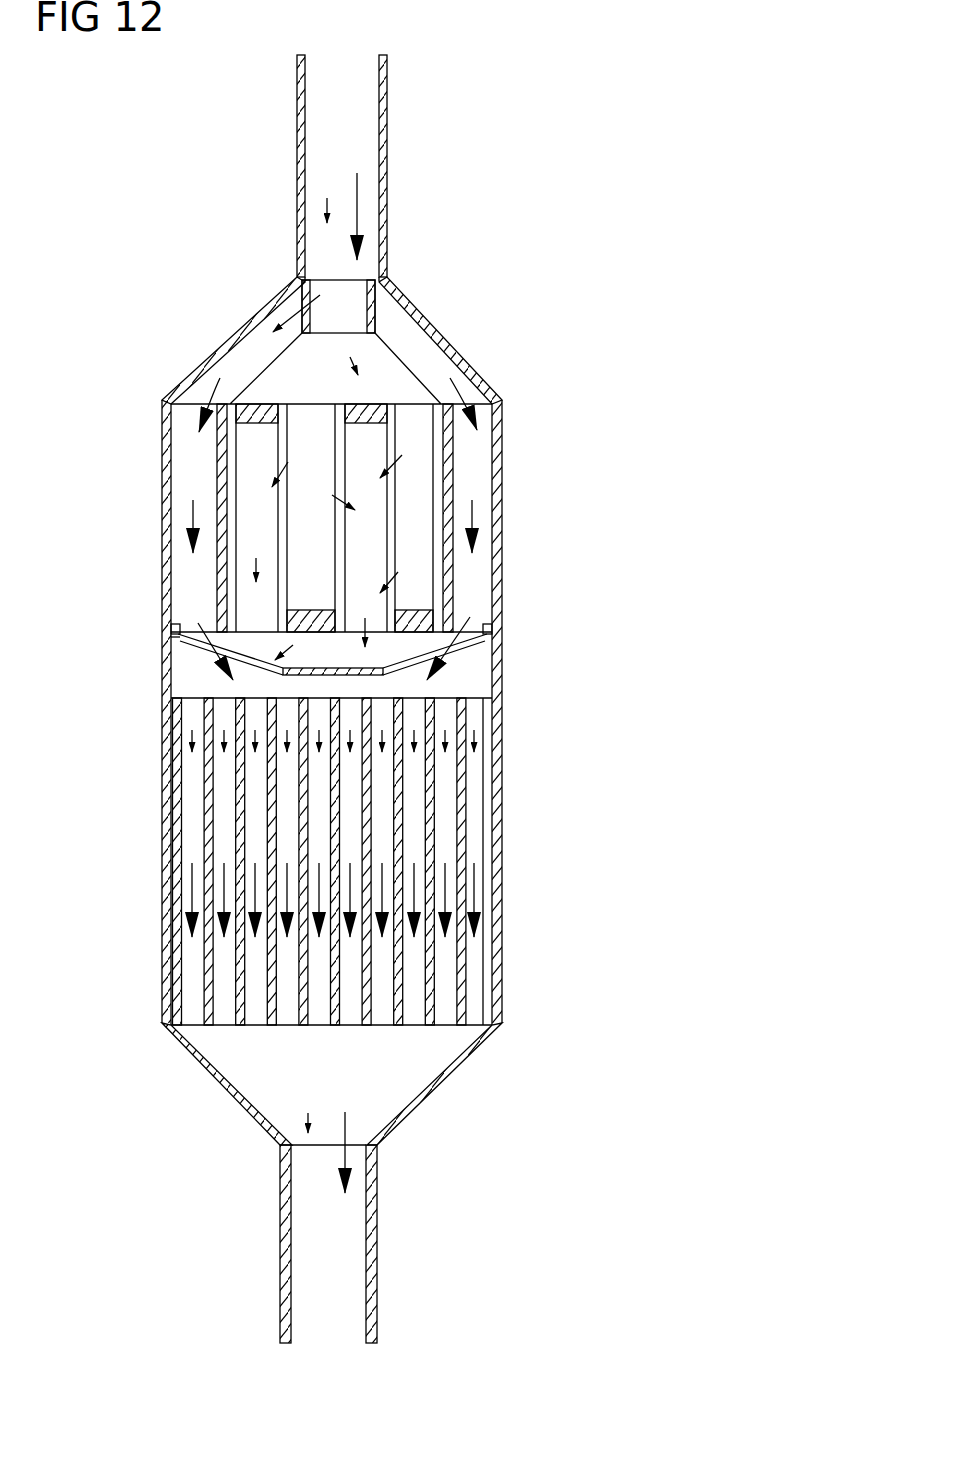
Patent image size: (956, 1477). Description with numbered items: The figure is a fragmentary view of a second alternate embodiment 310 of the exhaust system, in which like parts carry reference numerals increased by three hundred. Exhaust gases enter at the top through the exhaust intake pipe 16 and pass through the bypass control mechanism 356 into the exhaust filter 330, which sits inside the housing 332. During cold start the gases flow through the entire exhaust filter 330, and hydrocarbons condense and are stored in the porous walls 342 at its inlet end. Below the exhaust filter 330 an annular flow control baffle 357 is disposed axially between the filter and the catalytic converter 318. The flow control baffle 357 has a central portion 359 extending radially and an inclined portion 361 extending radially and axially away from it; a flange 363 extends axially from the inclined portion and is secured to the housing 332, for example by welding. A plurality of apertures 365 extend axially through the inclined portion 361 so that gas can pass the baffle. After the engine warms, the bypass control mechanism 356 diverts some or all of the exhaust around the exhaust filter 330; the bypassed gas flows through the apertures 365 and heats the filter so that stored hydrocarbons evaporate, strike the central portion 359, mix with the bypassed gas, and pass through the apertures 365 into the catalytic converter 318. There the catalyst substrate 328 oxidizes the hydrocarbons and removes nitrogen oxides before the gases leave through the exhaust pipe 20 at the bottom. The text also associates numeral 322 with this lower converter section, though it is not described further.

The exhaust intake pipe 16 is at (387, 145).
The exhaust pipe 20 is at (372, 1193).
The second alternate embodiment of the exhaust system 310 is at (515, 113).
The bypass control mechanism 356 is at (376, 310).
The porous walls 342 is at (337, 410).
The exhaust filter 330 is at (456, 492).
The housing 332 is at (503, 527).
The flange 363 is at (170, 633).
The flow control baffle 357 is at (170, 640).
The apertures 365 is at (203, 648).
The inclined portion 361 is at (450, 647).
The central portion 359 is at (383, 672).
The housing 322 is at (497, 807).
The catalytic converter 318 is at (397, 861).
The catalyst substrate 328 is at (458, 953).